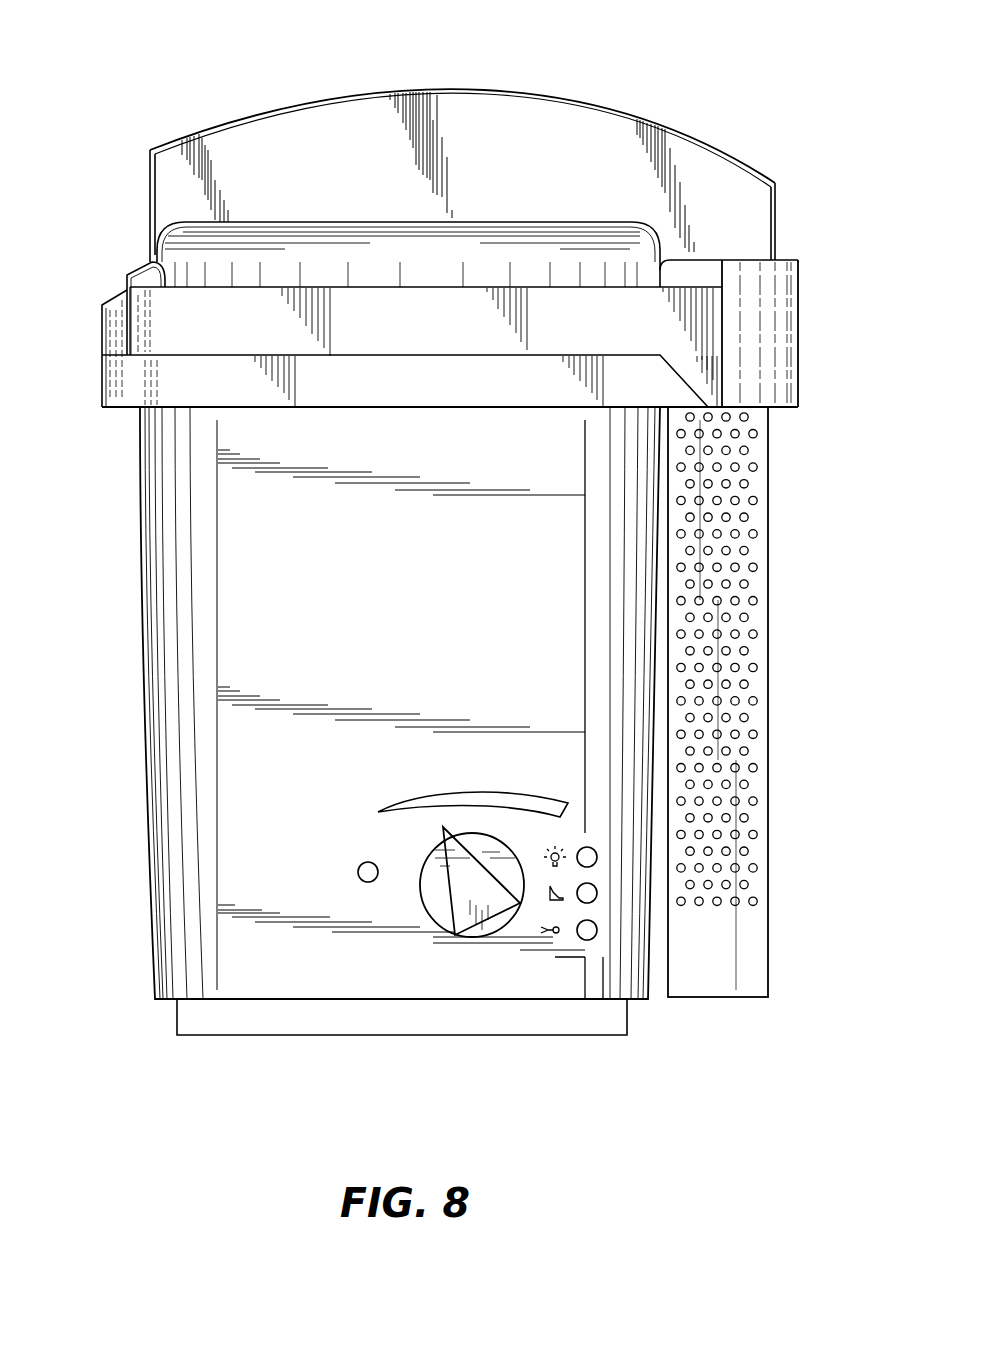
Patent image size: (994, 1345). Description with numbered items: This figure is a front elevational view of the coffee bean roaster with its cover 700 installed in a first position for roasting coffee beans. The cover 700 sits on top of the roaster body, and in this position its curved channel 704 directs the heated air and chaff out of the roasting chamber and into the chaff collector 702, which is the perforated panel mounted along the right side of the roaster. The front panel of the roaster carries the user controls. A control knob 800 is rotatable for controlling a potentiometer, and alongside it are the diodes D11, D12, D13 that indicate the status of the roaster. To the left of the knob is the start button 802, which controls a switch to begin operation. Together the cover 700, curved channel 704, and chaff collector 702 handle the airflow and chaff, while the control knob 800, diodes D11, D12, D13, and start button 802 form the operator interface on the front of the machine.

The cover 700 is at (450, 647).
The curved channel 704 is at (612, 132).
The chaff collector 702 is at (768, 572).
The control knob 800 is at (497, 935).
The start button 802 is at (358, 872).
The diode D13 is at (597, 861).
The diode D11 is at (597, 898).
The diode D12 is at (597, 935).